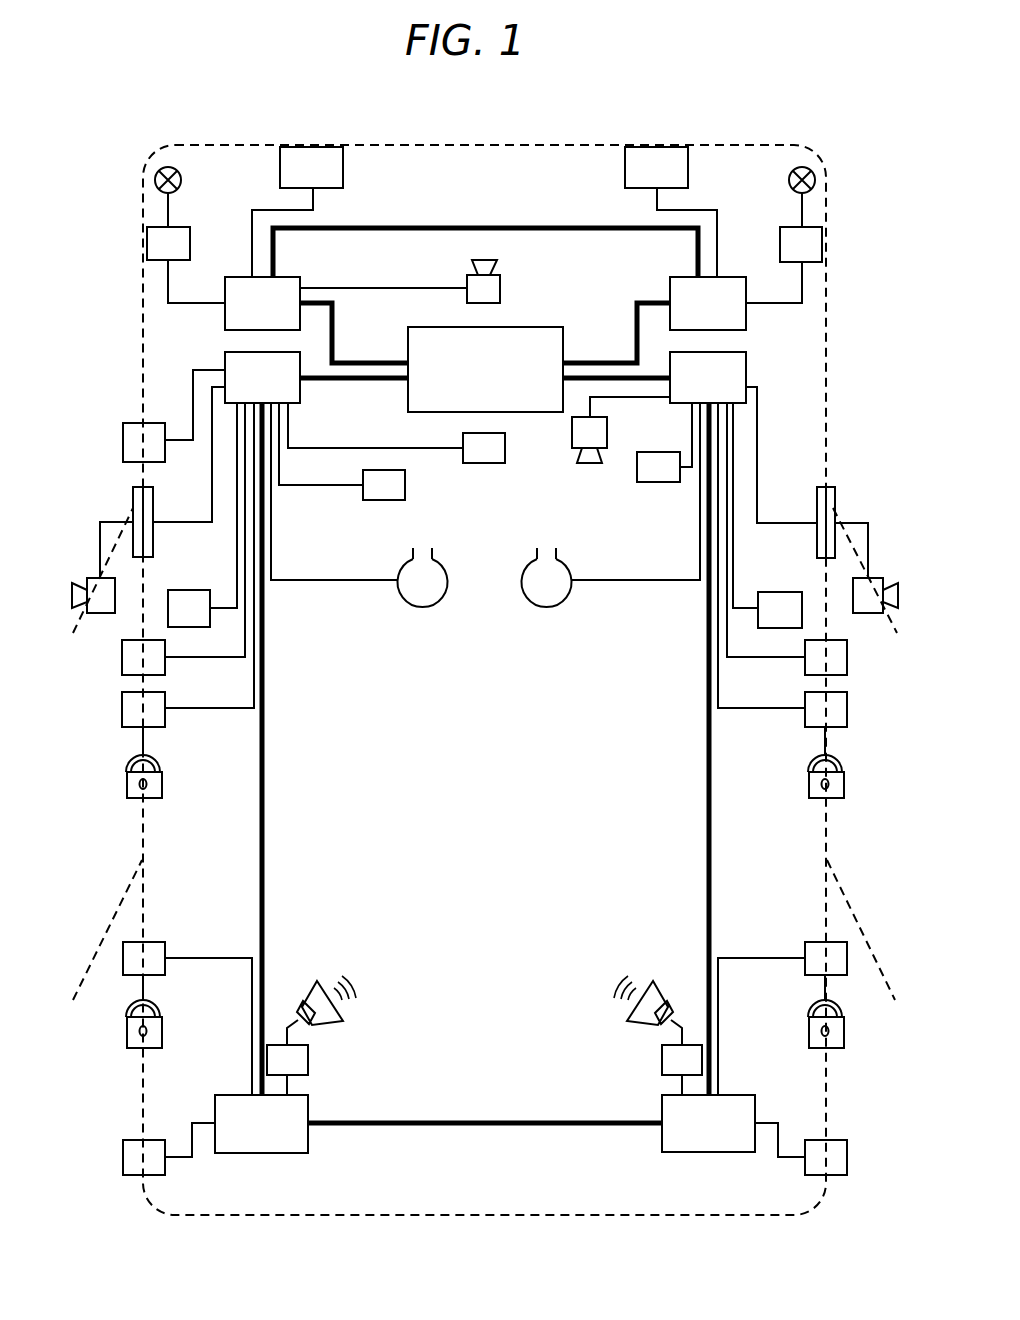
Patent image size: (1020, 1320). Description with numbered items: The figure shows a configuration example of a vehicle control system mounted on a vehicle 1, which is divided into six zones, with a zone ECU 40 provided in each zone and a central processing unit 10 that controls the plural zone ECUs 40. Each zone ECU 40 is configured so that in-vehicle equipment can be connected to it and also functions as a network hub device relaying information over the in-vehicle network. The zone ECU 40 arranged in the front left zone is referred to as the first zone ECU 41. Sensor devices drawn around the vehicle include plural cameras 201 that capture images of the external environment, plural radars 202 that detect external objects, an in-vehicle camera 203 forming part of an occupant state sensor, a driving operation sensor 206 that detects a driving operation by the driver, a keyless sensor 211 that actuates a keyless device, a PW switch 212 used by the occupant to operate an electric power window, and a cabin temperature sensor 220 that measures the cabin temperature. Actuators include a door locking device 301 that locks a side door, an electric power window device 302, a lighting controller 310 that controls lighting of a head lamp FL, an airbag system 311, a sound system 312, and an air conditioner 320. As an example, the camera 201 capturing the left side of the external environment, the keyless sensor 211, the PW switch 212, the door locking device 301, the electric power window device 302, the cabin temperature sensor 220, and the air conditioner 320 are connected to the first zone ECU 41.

The vehicle 1 is at (192, 143).
The central processing unit 10 is at (558, 327).
The zone ECU 40 is at (480, 680).
The first zone ECU 41 is at (225, 356).
The head lamp FL is at (155, 180).
The camera 201 is at (467, 280).
The radar 202 is at (333, 147).
The in-vehicle camera 203 is at (572, 430).
The driving operation sensor 206 is at (660, 452).
The keyless sensor 211 is at (130, 423).
The PW switch 212 is at (178, 590).
The cabin temperature sensor 220 is at (375, 500).
The door locking device 301 is at (123, 751).
The electric power window device 302 is at (122, 660).
The lighting controller 310 is at (147, 247).
The airbag system 311 is at (402, 617).
The sound system 312 is at (320, 1047).
The air conditioner 320 is at (482, 465).